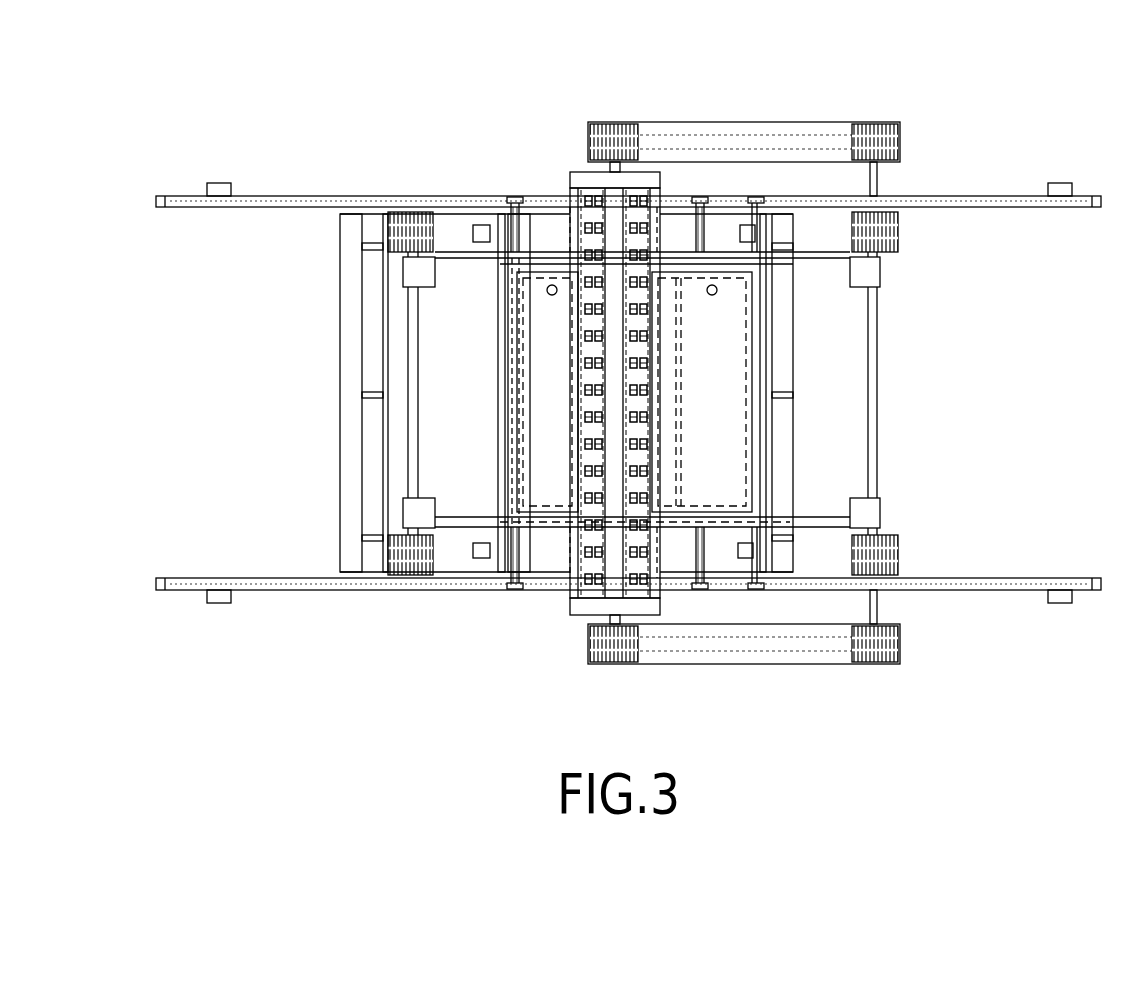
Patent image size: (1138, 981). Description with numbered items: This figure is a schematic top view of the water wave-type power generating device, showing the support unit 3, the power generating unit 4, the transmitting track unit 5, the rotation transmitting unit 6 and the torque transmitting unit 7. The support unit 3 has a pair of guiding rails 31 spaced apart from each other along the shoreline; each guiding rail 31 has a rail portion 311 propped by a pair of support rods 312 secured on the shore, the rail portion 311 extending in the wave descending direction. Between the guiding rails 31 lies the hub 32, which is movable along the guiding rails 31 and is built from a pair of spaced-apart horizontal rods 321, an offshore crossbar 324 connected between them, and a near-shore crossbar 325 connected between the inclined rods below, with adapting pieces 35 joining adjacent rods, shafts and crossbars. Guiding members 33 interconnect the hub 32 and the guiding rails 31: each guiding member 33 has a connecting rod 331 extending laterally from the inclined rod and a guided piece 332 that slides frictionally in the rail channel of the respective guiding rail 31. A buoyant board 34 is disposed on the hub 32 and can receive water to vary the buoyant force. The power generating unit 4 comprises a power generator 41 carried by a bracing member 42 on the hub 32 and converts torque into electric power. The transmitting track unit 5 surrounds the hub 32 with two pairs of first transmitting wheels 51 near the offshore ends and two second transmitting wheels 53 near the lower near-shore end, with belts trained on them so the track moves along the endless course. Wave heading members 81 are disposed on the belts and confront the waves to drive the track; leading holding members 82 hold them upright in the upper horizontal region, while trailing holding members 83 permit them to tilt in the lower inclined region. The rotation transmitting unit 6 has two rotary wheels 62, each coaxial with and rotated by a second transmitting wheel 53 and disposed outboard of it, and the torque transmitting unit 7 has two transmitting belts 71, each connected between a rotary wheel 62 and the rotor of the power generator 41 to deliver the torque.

The support unit 3 is at (965, 170).
The guiding rail 31 is at (1082, 592).
The rail portion 311 is at (1037, 197).
The support rod 312 is at (220, 186).
The hub 32 is at (397, 376).
The horizontal rod 321 is at (457, 262).
The offshore crossbar 324 is at (413, 398).
The near-shore crossbar 325 is at (872, 413).
The guiding member 33 is at (525, 220).
The connecting rod 331 is at (512, 232).
The guided piece 332 is at (515, 195).
The buoyant board 34 is at (738, 522).
The adapting piece 35 is at (417, 272).
The power generating unit 4 is at (471, 354).
The power generator 41 is at (592, 343).
The bracing member 42 is at (580, 178).
The transmitting track unit 5 is at (822, 232).
The first transmitting wheel 51 is at (405, 222).
The second transmitting wheel 53 is at (873, 238).
The rotation transmitting unit 6 is at (883, 101).
The rotary wheel 62 is at (873, 142).
The torque transmitting unit 7 is at (791, 674).
The transmitting belt 71 is at (792, 147).
The wave heading member 81 is at (763, 328).
The leading holding member 82 is at (785, 375).
The trailing holding member 83 is at (480, 232).